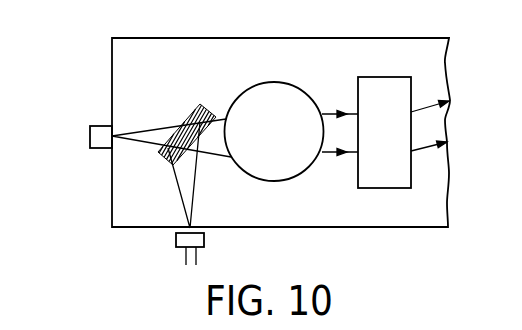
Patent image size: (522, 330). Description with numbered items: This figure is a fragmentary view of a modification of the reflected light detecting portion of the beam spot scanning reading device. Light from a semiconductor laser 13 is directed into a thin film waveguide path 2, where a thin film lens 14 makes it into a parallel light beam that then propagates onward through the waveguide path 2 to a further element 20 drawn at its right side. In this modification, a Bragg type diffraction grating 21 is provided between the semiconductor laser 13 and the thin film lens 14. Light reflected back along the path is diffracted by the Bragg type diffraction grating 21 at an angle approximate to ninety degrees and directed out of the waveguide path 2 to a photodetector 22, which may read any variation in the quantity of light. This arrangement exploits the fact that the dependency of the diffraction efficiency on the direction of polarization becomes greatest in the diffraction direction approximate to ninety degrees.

The thin film waveguide path 2 is at (350, 227).
The semiconductor laser 13 is at (90, 138).
The thin film lens 14 is at (282, 82).
The detector 20 is at (392, 77).
The Bragg type diffraction grating 21 is at (212, 105).
The photodetector 22 is at (176, 240).